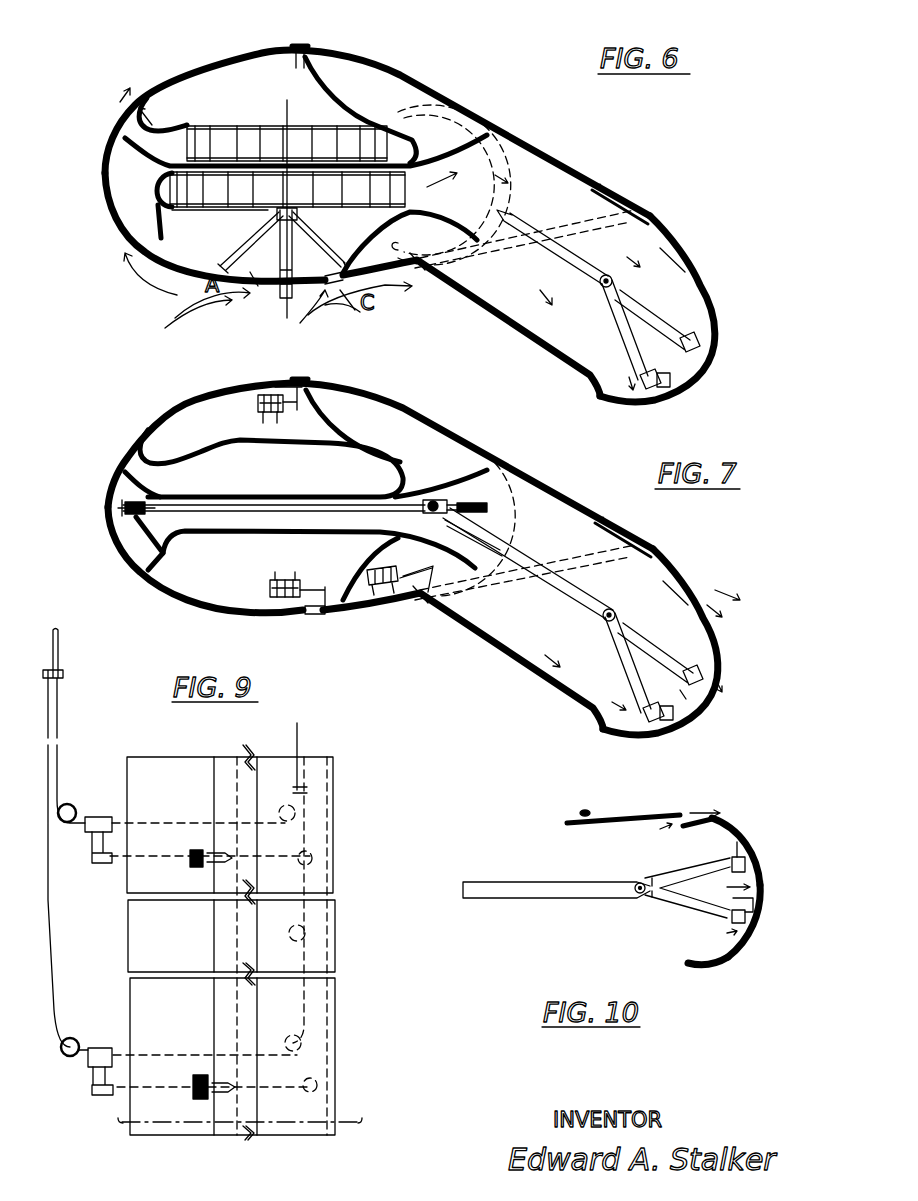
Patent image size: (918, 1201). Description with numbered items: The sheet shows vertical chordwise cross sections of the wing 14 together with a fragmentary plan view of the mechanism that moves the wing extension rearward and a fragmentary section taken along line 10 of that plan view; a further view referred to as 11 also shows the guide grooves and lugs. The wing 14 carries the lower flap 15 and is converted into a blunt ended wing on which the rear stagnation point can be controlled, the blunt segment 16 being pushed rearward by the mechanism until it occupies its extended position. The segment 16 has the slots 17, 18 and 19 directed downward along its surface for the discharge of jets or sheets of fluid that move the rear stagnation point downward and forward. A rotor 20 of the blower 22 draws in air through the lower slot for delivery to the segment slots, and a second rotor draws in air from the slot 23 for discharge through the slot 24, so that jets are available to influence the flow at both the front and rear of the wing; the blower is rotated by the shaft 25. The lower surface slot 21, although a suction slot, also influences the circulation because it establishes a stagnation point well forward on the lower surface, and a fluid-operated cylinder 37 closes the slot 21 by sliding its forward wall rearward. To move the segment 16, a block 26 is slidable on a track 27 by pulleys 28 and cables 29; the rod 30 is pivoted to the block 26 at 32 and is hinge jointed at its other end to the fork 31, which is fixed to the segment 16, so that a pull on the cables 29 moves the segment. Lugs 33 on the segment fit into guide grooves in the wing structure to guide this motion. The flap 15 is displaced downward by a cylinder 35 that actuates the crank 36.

In FIG. 9, the section line 10— 10 is at (241, 1112).
In FIG. 6, the figure reference 11 is at (605, 220).
In FIG. 7, the figure reference 11 is at (607, 556).
In FIG. 6, the wing 14 is at (443, 82).
In FIG. 7, the wing 14 is at (392, 408).
In FIG. 6, the lower flap 15 is at (472, 307).
In FIG. 7, the lower flap 15 is at (455, 632).
In FIG. 6, the blunt segment 16 is at (716, 310).
In FIG. 7, the blunt segment 16 is at (720, 645).
In FIG. 9, the blunt segment 16 is at (335, 820).
In FIG. 10, the blunt segment 16 is at (750, 834).
In FIG. 10, the slot 17 is at (657, 813).
In FIG. 10, the slot 18 is at (758, 907).
In FIG. 10, the slot 19 is at (730, 953).
In FIG. 6, the rotor 20 is at (200, 210).
In FIG. 6, the lower surface slot 21 is at (338, 282).
In FIG. 7, the lower surface slot 21 is at (330, 614).
In FIG. 6, the blower 22 is at (207, 137).
In FIG. 6, the slot 23 is at (303, 56).
In FIG. 7, the slot 23 is at (302, 388).
In FIG. 6, the slot 24 is at (137, 115).
In FIG. 7, the slot 24 is at (135, 450).
In FIG. 6, the shaft 25 is at (277, 287).
In FIG. 7, the block 26 is at (424, 513).
In FIG. 7, the track 27 is at (153, 506).
In FIG. 7, the pulleys 28 is at (112, 496).
In FIG. 9, the pulleys 28 is at (80, 1040).
In FIG. 7, the cables 29 is at (358, 509).
In FIG. 9, the cables 29 is at (157, 1055).
In FIG. 6, the rod 30 is at (591, 268).
In FIG. 7, the rod 30 is at (567, 597).
In FIG. 9, the rod 30 is at (165, 858).
In FIG. 10, the rod 30 is at (563, 890).
In FIG. 6, the fork 31 is at (623, 329).
In FIG. 7, the fork 31 is at (626, 673).
In FIG. 9, the fork 31 is at (300, 1086).
In FIG. 10, the fork 31 is at (683, 905).
In FIG. 7, the pivot 32 is at (434, 499).
In FIG. 9, the pivot 32 is at (190, 868).
In FIG. 10, the lugs 33 is at (585, 810).
In FIG. 7, the cylinder 35 is at (378, 570).
In FIG. 7, the crank 36 is at (433, 584).
In FIG. 9, the crank 36 is at (178, 1090).
In FIG. 7, the cylinder 37 is at (266, 393).